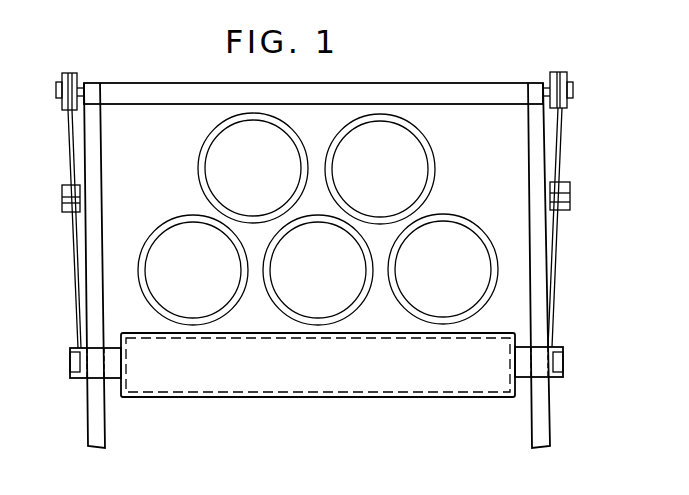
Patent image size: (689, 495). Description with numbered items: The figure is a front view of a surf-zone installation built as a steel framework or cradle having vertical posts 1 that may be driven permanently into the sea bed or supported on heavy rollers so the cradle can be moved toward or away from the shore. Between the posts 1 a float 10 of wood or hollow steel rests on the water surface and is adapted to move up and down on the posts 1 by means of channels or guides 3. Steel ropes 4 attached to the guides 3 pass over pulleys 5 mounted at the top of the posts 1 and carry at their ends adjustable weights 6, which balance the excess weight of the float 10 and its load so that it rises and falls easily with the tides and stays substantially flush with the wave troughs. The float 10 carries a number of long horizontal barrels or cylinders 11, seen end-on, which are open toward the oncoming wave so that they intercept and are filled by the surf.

The vertical post 1 is at (101, 190).
The guide 3 is at (70, 371).
The steel rope 4 is at (77, 287).
The pulley 5 is at (62, 82).
The adjustable weight 6 is at (62, 200).
The float 10 is at (264, 395).
The barrel 11 is at (206, 141).